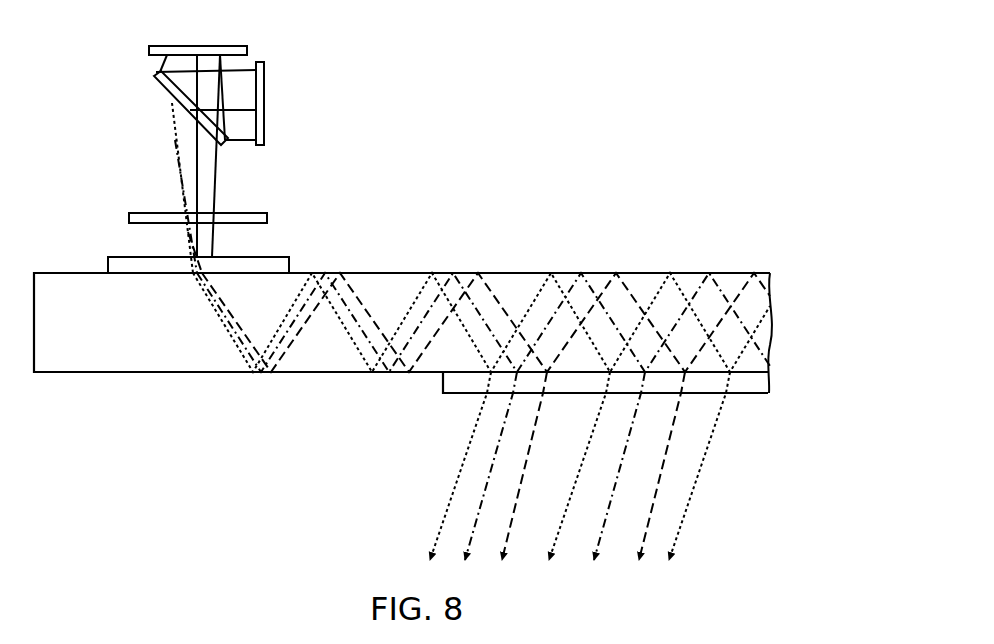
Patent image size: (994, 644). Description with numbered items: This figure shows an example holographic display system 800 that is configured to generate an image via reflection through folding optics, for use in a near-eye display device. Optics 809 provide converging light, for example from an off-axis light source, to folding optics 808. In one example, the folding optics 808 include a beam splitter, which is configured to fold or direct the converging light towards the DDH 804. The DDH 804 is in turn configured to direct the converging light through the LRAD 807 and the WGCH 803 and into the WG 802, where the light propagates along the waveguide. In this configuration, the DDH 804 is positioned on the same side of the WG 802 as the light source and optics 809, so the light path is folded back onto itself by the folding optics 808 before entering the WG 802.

The holographic display system 800 is at (703, 89).
The WG 802 is at (34, 337).
The WGCH 803 is at (289, 258).
The DDH 804 is at (248, 47).
The LRAD 807 is at (267, 213).
The folding optics 808 is at (155, 80).
The optics 809 is at (265, 95).